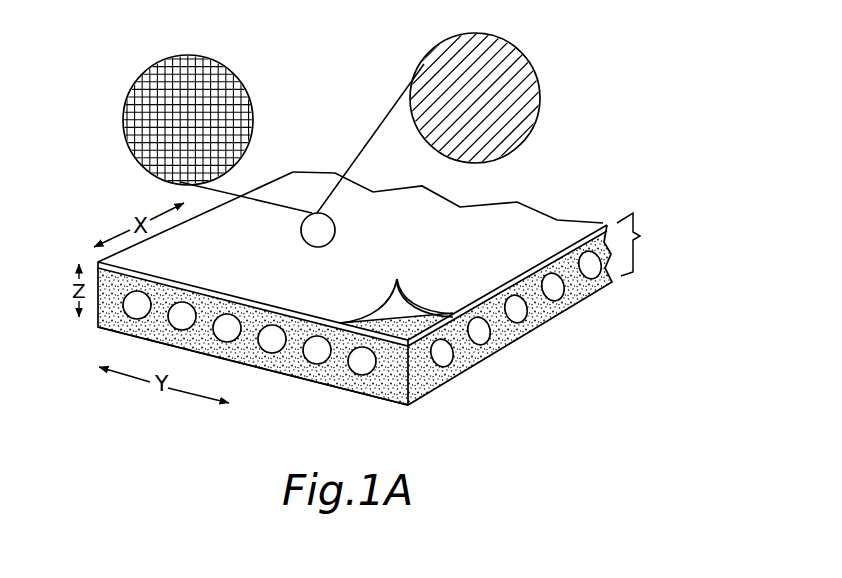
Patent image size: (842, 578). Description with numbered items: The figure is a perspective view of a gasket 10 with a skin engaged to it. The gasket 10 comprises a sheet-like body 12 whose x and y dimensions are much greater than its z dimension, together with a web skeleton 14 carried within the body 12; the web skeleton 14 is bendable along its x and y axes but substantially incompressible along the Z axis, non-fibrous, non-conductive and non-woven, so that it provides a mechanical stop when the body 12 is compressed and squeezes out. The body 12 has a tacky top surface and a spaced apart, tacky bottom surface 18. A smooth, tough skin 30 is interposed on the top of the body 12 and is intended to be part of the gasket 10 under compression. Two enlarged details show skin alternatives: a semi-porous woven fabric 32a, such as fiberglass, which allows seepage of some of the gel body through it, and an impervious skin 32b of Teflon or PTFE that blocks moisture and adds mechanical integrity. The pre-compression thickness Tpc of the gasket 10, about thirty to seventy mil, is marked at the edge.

The gasket 10 is at (553, 366).
The body 12 is at (212, 357).
The web skeleton 14 is at (361, 356).
The tacky bottom surface 18 is at (170, 345).
The skin 30 is at (469, 227).
The semi-porous woven fabric 32a is at (157, 62).
The impervious skin 32b is at (523, 53).
The pre-compression thickness Tpc is at (648, 244).